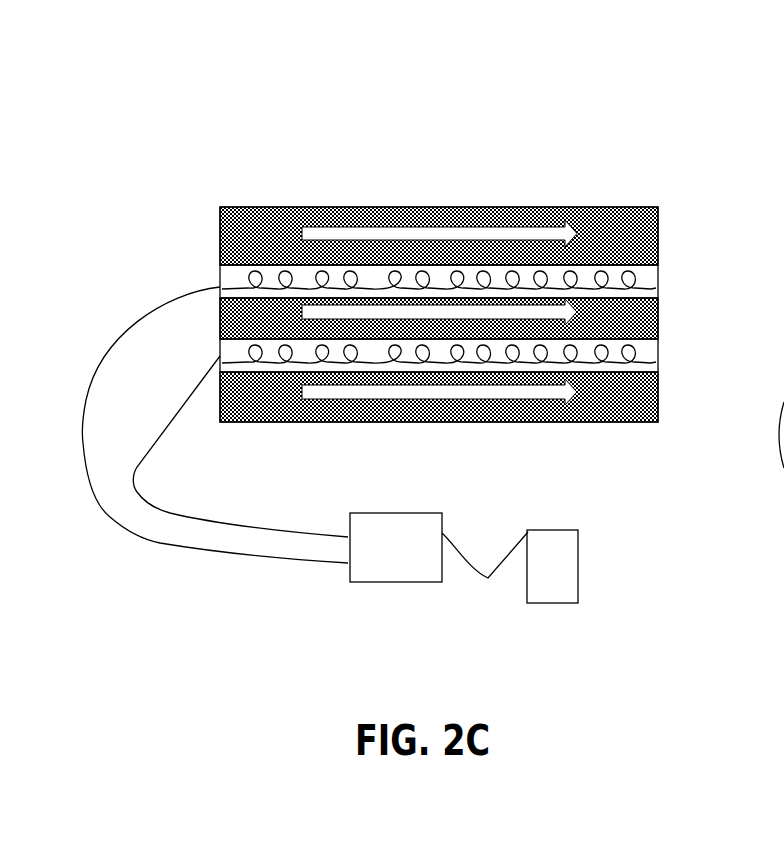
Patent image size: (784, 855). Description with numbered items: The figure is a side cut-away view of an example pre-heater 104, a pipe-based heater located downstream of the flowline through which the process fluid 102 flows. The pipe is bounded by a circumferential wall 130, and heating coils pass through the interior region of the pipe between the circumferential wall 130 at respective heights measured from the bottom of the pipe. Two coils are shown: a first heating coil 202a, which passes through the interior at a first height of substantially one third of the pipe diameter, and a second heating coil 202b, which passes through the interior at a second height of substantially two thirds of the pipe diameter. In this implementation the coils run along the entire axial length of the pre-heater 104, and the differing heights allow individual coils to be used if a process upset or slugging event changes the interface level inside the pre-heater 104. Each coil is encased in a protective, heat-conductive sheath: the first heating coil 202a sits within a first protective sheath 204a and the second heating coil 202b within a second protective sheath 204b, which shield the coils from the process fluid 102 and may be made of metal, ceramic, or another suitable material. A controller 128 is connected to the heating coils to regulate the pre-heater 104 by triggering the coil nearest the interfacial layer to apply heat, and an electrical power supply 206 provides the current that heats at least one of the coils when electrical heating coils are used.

The pre-heater 104 is at (430, 312).
The process fluid 102 is at (607, 222).
The circumferential wall 130 is at (511, 225).
The first heating coil 202a is at (218, 277).
The second heating coil 202b is at (217, 349).
The first protective sheath 204a is at (633, 254).
The second protective sheath 204b is at (602, 375).
The controller 128 is at (380, 582).
The electrical power supply 206 is at (578, 557).